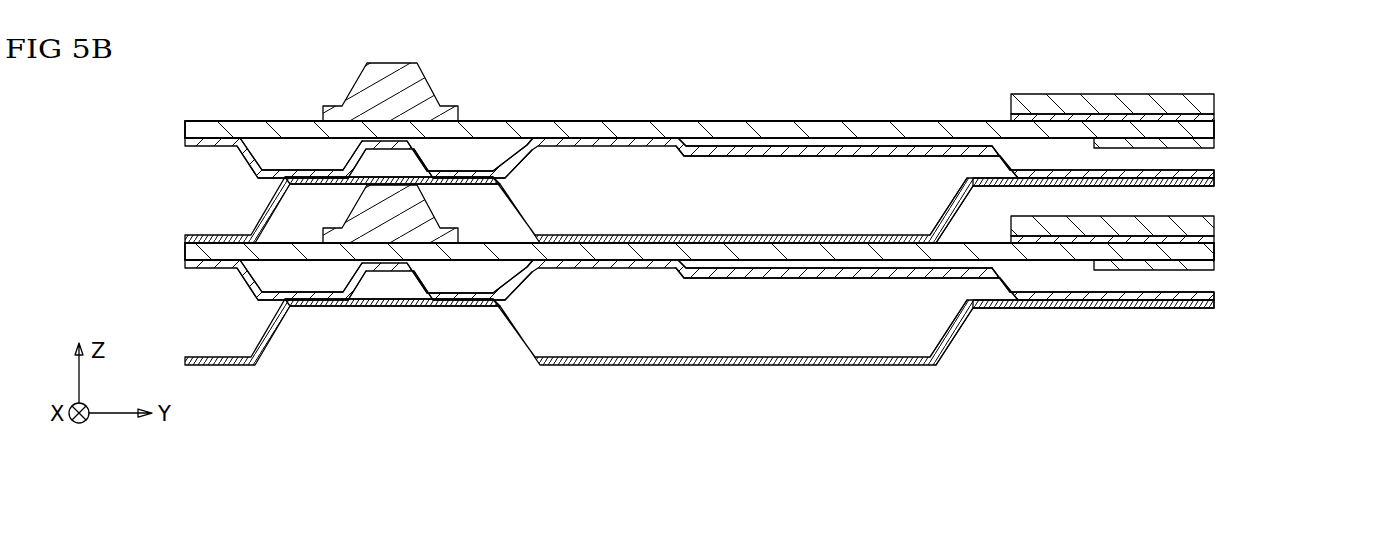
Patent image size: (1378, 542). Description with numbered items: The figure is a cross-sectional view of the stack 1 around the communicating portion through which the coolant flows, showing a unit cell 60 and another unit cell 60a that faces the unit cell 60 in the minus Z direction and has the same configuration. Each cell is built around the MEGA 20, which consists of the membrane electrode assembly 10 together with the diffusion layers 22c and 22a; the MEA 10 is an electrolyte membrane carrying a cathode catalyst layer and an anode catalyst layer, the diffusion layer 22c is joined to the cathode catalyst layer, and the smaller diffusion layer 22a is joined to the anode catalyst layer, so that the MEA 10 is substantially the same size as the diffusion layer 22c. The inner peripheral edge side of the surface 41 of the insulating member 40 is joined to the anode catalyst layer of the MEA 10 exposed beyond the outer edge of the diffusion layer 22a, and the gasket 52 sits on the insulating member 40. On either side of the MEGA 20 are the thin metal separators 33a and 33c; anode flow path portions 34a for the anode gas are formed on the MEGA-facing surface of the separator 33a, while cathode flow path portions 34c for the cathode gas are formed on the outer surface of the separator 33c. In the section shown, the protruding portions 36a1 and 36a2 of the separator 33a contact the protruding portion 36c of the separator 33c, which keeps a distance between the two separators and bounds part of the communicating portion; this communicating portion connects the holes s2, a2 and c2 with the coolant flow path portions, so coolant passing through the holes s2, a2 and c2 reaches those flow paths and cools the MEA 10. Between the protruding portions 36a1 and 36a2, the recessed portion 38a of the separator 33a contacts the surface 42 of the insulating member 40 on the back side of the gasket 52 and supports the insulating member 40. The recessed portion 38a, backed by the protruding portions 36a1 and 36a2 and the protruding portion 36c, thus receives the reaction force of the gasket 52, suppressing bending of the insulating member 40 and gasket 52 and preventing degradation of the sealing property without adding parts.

The stack 1 is at (1314, 46).
The membrane electrode assembly (MEA) 10 is at (1217, 119).
The MEGA 20 is at (1170, 179).
The diffusion layer 22a is at (1210, 143).
The diffusion layer 22c is at (1210, 103).
The separator 33a is at (1218, 173).
The separator 33c is at (1218, 183).
The anode flow path portion 34a is at (1027, 172).
The cathode flow path portion 34c is at (1052, 187).
The protruding portion 36a1 is at (292, 166).
The protruding portion 36a2 is at (489, 166).
The protruding portion 36c is at (467, 187).
The recessed portion 38a is at (385, 149).
The insulating member 40 is at (651, 121).
The surface 41 is at (599, 120).
The surface 42 is at (800, 158).
The gasket 52 is at (375, 74).
The unit cell 60 is at (1335, 156).
The unit cell 60a is at (1335, 278).
The hole s2 is at (183, 131).
The hole a2 is at (183, 143).
The hole c2 is at (178, 237).